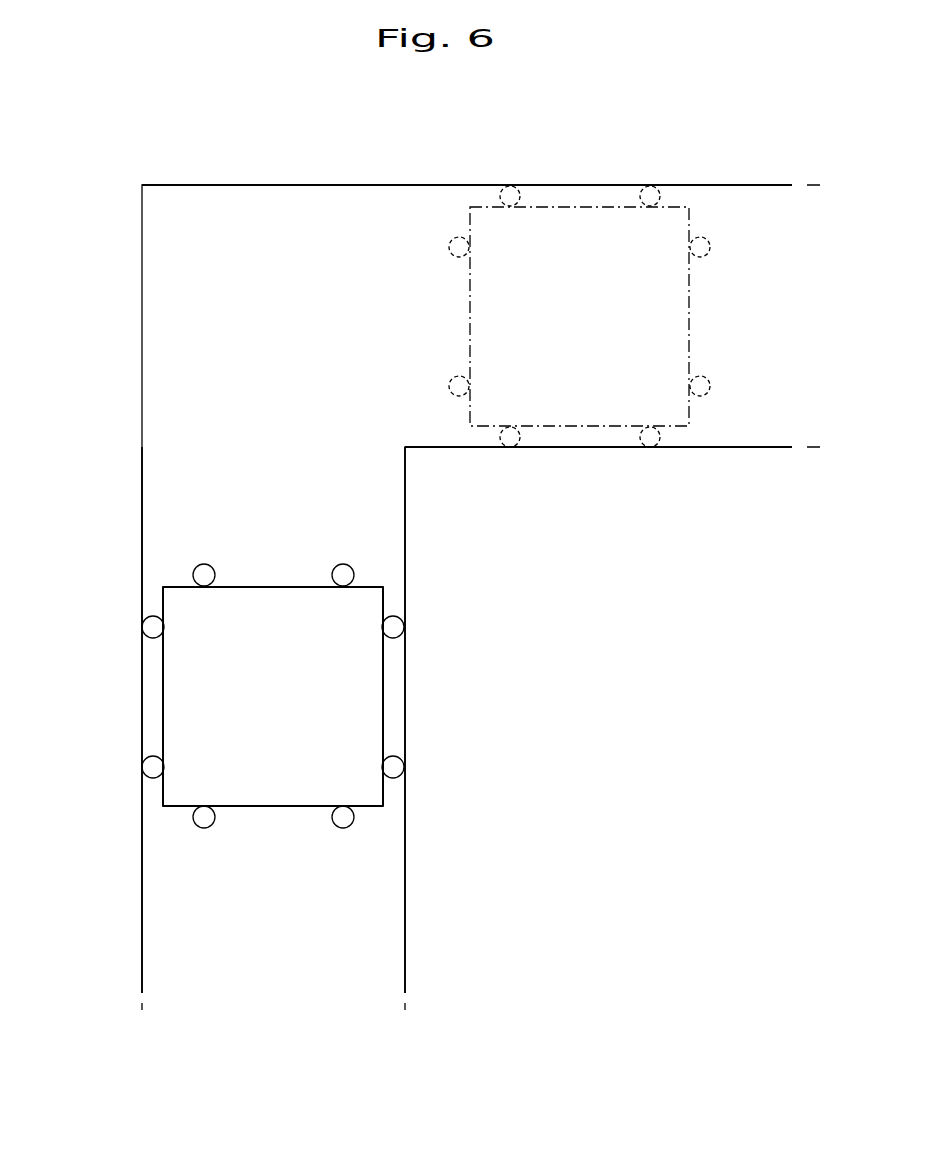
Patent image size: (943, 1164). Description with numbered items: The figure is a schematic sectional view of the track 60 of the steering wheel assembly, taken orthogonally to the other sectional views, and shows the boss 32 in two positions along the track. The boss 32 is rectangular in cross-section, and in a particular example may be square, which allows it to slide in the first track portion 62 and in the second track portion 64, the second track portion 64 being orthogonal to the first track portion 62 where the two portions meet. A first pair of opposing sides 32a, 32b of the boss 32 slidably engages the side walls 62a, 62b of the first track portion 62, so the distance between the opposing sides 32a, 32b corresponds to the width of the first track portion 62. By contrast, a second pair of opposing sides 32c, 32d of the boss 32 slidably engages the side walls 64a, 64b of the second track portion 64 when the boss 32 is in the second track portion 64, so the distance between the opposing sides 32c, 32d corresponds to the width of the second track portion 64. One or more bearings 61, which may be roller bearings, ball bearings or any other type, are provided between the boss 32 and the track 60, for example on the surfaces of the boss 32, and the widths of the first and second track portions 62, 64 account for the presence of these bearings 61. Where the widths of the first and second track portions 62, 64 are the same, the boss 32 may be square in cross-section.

The boss 32 is at (353, 705).
The first opposing side of the boss 32a is at (163, 668).
The second opposing side of the boss 32b is at (383, 670).
The third opposing side of the boss 32c is at (270, 585).
The fourth opposing side of the boss 32d is at (262, 806).
The track 60 is at (183, 448).
The bearings 61 is at (150, 627).
The first track portion 62 is at (355, 913).
The side wall of the first track portion 62a is at (142, 702).
The side wall of the first track portion 62b is at (405, 845).
The second track portion 64 is at (710, 430).
The side wall of the second track portion 64a is at (608, 188).
The side wall of the second track portion 64b is at (771, 447).